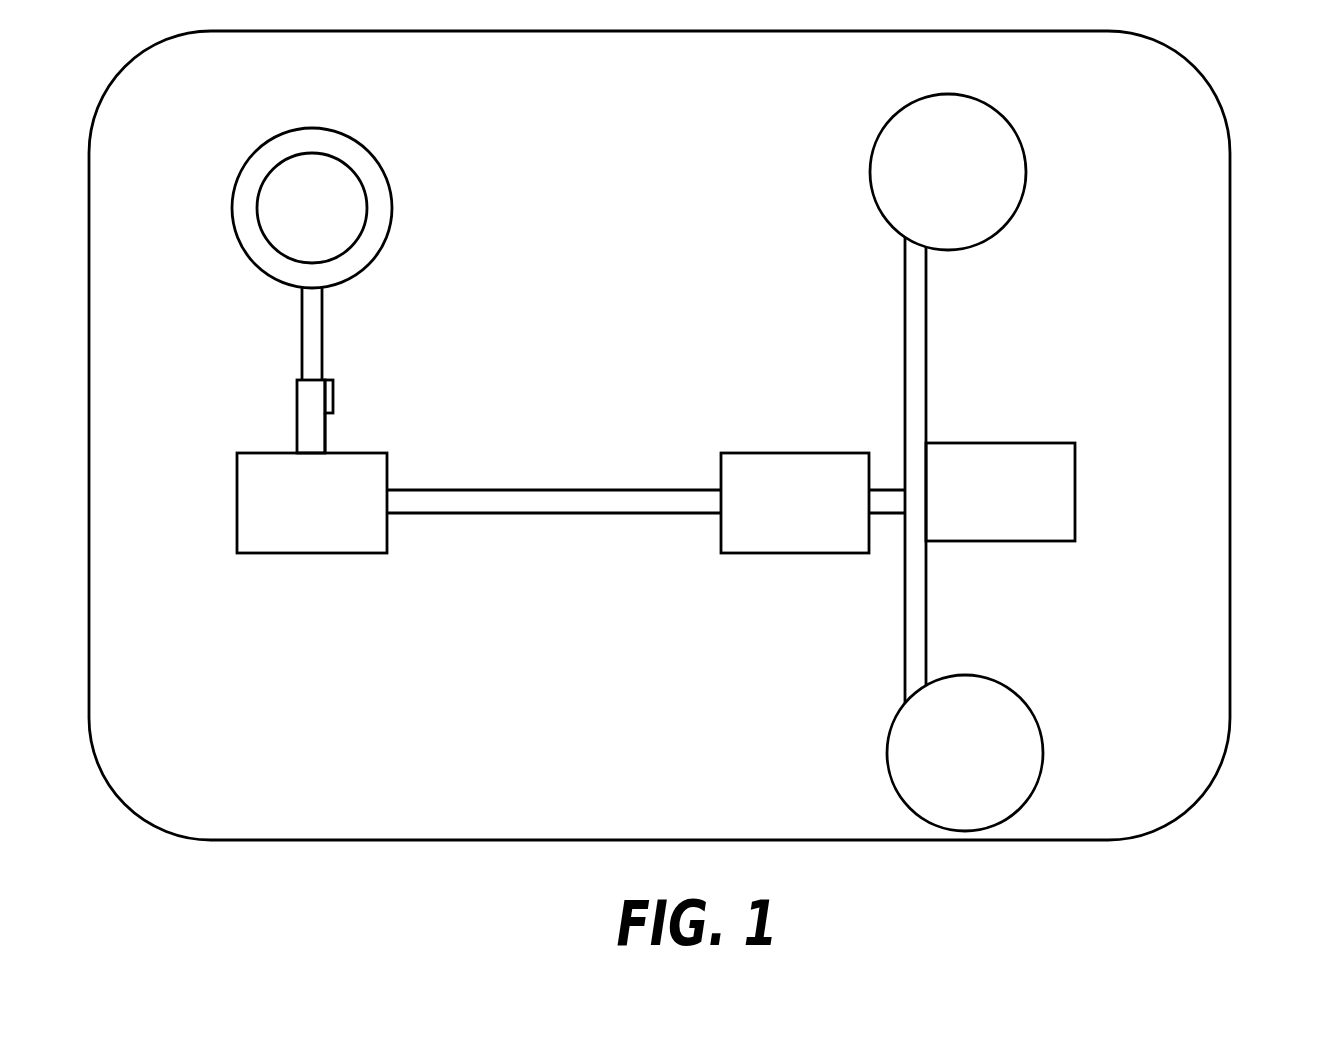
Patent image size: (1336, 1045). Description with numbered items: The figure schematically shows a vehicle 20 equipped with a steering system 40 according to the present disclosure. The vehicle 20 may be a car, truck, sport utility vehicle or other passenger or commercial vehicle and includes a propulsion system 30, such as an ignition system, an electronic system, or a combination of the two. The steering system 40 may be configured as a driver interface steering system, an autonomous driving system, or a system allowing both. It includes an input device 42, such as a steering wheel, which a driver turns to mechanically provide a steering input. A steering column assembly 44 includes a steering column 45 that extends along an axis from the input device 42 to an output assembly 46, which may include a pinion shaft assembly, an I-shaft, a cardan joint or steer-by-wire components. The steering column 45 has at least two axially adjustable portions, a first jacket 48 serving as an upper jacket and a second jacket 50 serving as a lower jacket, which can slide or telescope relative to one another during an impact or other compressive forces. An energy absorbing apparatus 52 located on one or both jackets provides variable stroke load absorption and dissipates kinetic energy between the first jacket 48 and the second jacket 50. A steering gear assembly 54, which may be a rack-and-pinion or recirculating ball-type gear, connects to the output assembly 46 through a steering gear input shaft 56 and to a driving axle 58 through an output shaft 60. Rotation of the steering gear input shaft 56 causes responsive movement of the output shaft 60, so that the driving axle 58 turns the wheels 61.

The vehicle 20 is at (1234, 88).
The propulsion system 30 is at (989, 507).
The steering system 40 is at (1016, 462).
The input device 42 is at (247, 171).
The steering column assembly 44 is at (309, 367).
The steering column 45 is at (293, 397).
The output assembly 46 is at (299, 518).
The first jacket 48 is at (326, 330).
The second jacket 50 is at (329, 441).
The energy absorbing apparatus 52 is at (337, 397).
The steering gear assembly 54 is at (782, 518).
The steering gear input shaft 56 is at (697, 497).
The driving axle 58 is at (922, 590).
The output shaft 60 is at (893, 497).
The wheels 61 is at (1001, 230).